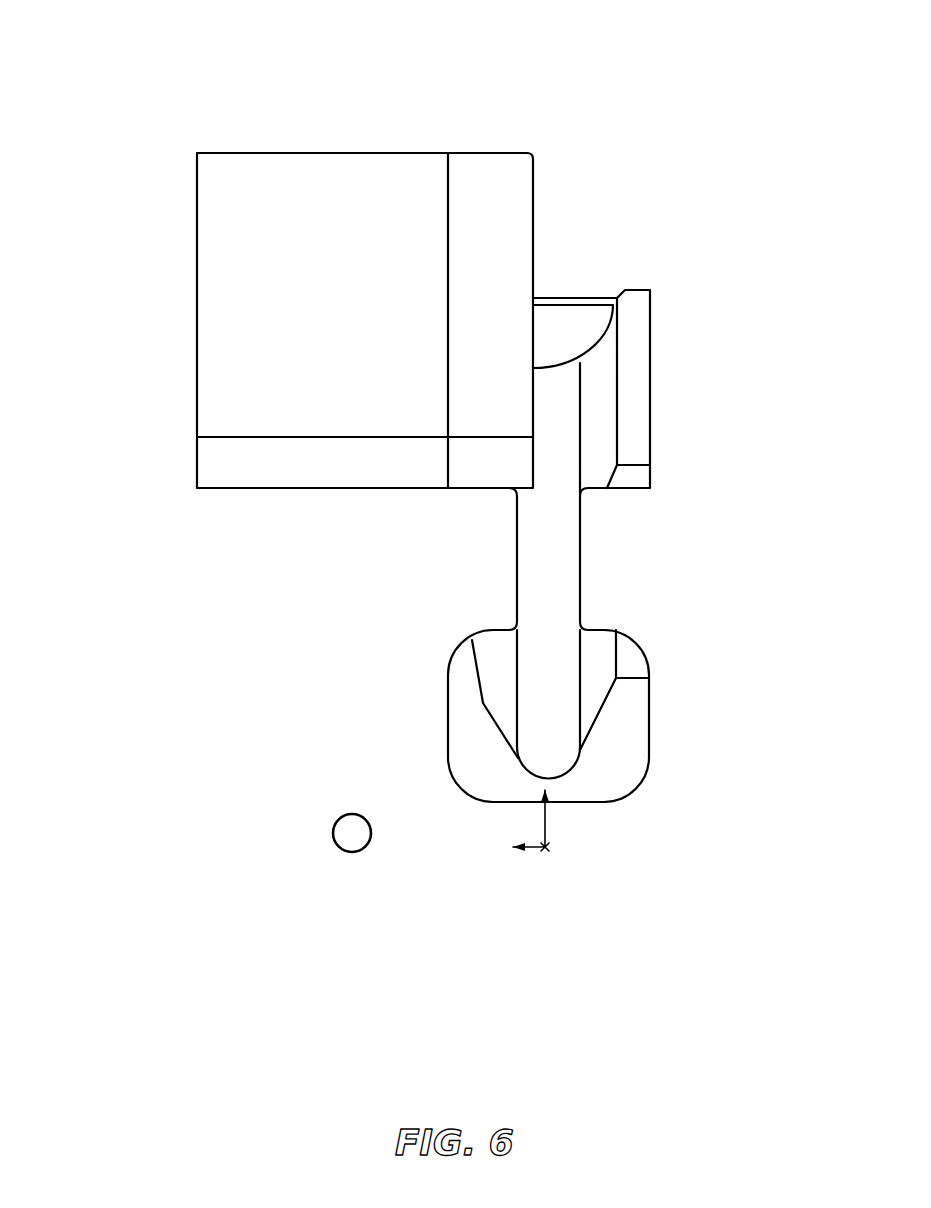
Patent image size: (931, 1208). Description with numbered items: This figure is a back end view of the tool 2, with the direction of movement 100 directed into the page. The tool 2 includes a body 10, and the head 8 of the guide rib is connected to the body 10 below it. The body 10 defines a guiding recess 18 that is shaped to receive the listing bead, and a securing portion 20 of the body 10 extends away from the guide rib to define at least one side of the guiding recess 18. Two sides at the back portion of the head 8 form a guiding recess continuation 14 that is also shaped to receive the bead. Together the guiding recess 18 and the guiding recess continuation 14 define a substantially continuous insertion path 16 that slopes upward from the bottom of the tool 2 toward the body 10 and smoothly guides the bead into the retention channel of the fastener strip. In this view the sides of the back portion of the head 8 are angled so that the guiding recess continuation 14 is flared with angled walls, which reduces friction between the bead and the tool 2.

The tool 2 is at (155, 311).
The head 8 is at (624, 743).
The body 10 is at (183, 483).
The guiding recess continuation 14 is at (545, 742).
The insertion path 16 is at (545, 590).
The guiding recess 18 is at (557, 419).
The securing portion 20 is at (266, 182).
The direction of movement 100 is at (333, 826).